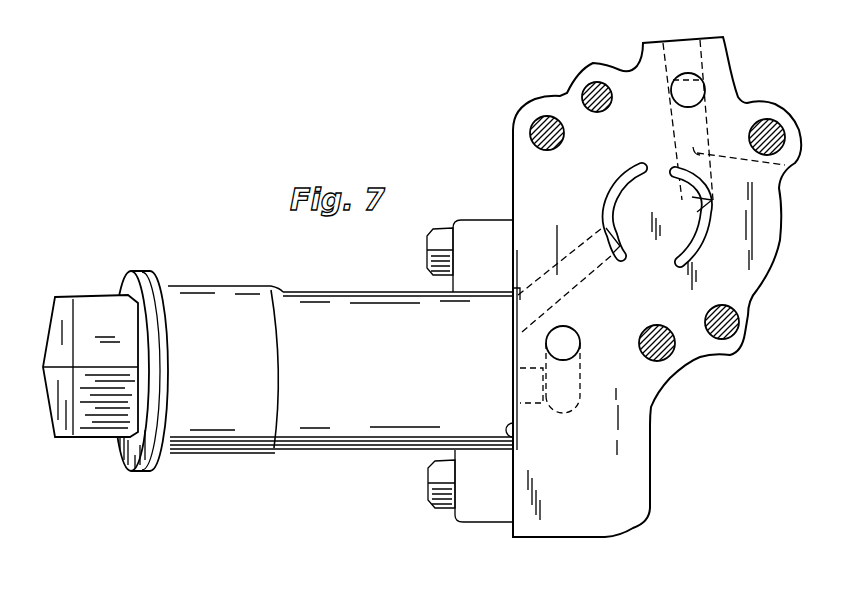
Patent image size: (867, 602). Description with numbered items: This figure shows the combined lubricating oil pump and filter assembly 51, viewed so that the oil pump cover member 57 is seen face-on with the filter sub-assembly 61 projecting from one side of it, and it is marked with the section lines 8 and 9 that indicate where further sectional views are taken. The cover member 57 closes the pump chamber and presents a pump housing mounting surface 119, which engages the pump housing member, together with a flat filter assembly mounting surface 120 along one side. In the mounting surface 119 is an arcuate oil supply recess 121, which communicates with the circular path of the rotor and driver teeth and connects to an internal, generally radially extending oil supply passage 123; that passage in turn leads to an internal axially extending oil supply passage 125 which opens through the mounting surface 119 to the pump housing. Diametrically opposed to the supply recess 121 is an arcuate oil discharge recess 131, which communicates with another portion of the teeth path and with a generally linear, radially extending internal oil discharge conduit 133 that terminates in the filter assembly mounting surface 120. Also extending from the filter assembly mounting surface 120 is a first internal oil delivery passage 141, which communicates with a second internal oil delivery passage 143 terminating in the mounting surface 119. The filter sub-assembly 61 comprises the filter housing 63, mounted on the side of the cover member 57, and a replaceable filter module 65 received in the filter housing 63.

The section line 8- 8 is at (513, 12).
The section line 9- 9 is at (513, 187).
The combined lubricating oil pump and filter assembly 51 is at (405, 489).
The oil pump cover member 57 is at (732, 112).
The filter sub-assembly 61 is at (326, 461).
The filter housing 63 is at (361, 302).
The replaceable filter module 65 is at (123, 450).
The pump housing mounting surface 119 is at (760, 202).
The filter assembly mounting surface 120 is at (520, 434).
The arcuate oil supply recess 121 is at (700, 233).
The radially extending oil supply passage 123 is at (760, 166).
The axially extending oil supply passage 125 is at (690, 76).
The arcuate oil discharge recess 131 is at (613, 174).
The internal oil discharge conduit 133 is at (550, 282).
The first internal oil delivery passage 141 is at (540, 377).
The second internal oil delivery passage 143 is at (567, 376).